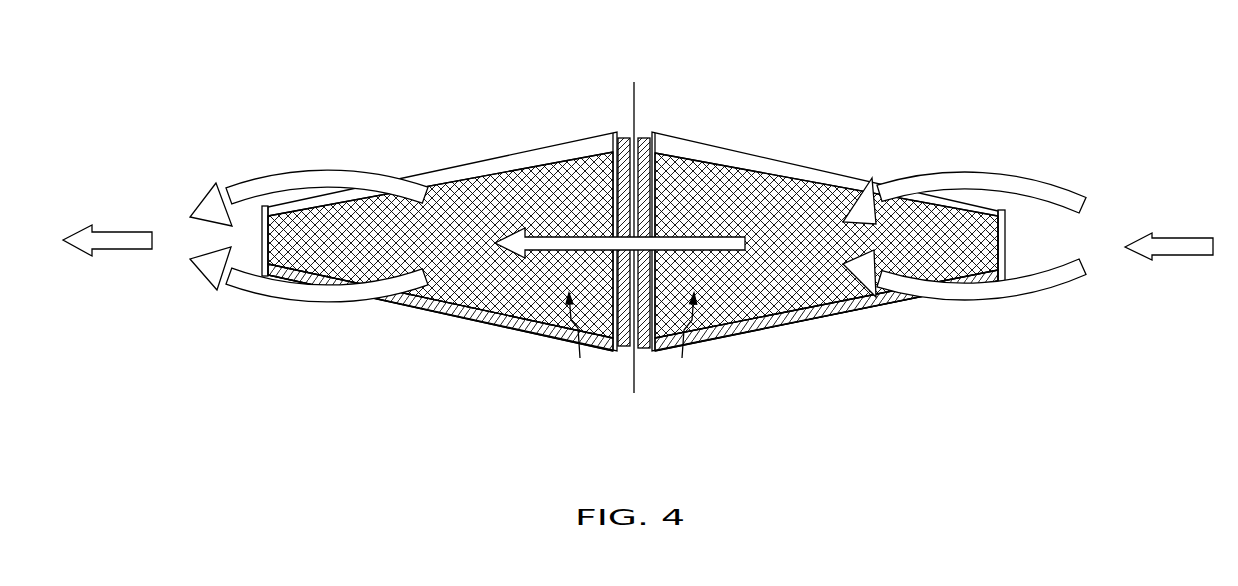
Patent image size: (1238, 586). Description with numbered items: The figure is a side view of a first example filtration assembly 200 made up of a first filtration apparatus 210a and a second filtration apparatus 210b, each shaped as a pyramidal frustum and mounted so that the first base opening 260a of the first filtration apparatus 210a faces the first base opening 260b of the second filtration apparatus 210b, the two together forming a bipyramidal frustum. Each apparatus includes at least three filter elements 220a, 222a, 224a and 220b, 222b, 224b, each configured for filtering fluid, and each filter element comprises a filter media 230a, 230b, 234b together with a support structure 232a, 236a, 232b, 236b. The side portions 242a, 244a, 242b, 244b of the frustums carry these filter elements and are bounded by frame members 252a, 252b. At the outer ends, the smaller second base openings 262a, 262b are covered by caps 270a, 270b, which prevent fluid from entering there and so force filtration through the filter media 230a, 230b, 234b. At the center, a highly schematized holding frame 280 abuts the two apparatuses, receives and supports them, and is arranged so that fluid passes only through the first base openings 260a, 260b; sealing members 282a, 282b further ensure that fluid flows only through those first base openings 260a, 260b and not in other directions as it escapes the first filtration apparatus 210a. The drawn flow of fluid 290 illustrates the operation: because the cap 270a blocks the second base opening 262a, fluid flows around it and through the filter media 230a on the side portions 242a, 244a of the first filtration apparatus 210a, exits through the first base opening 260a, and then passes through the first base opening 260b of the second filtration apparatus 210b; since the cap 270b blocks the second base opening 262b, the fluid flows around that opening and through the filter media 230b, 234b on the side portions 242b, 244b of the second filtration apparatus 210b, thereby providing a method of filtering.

The filtration assembly 200 is at (595, 272).
The first filtration apparatus 210a is at (890, 248).
The second filtration apparatus 210b is at (376, 238).
The filter element 220a is at (834, 327).
The filter element 220b is at (474, 332).
The filter element 222a is at (682, 340).
The filter element 222b is at (579, 340).
The filter element 224a is at (682, 130).
The filter element 224b is at (584, 135).
The filter media 230a is at (783, 320).
The filter media 230b is at (535, 338).
The support structure 232a is at (863, 297).
The support structure 232b is at (437, 300).
The filter media 234b is at (378, 215).
The support structure 236a is at (827, 207).
The support structure 236b is at (490, 187).
The side portion 242a is at (723, 347).
The side portion 242b is at (303, 297).
The side portion 244a is at (853, 207).
The side portion 244b is at (332, 220).
The member 252a is at (980, 215).
The member 252b is at (278, 208).
The first base opening 260a is at (663, 178).
The first base opening 260b is at (600, 176).
The second base opening 262a is at (1015, 275).
The second base opening 262b is at (253, 268).
The cap 270a is at (1015, 215).
The cap 270b is at (253, 210).
The holding frame 280 is at (634, 393).
The sealing member 282a is at (646, 134).
The sealing member 282b is at (622, 134).
The flow of fluid 290 is at (1185, 237).